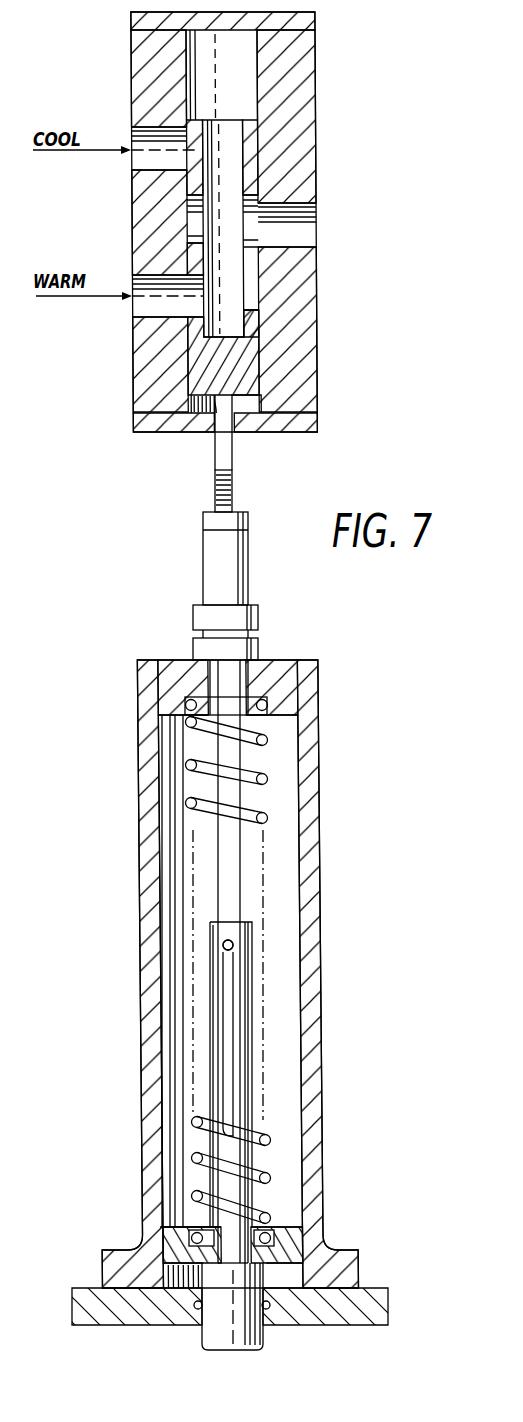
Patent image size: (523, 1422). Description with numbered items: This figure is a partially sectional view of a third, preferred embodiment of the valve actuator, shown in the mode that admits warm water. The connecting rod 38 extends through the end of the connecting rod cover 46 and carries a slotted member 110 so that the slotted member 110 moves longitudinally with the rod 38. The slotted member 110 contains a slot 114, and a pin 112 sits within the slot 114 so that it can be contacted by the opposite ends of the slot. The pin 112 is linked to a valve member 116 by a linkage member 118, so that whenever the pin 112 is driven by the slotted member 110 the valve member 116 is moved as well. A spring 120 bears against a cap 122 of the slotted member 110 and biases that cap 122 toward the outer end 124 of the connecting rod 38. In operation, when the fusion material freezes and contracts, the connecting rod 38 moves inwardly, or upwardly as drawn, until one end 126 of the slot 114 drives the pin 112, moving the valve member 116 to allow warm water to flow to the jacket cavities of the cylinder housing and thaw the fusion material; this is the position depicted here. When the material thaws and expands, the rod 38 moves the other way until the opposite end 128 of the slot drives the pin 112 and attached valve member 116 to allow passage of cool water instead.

The valve member 116 is at (263, 370).
The linkage member 118 is at (222, 690).
The slotted member 110 is at (215, 984).
The pin 112 is at (224, 947).
The end of the slot 126 is at (252, 928).
The slot 114 is at (242, 1024).
The spring 120 is at (191, 1123).
The end of the slot 128 is at (269, 1139).
The cap 122 is at (164, 1230).
The outer end 124 is at (228, 1261).
The connecting rod cover 46 is at (85, 1297).
The connecting rod 38 is at (257, 1331).